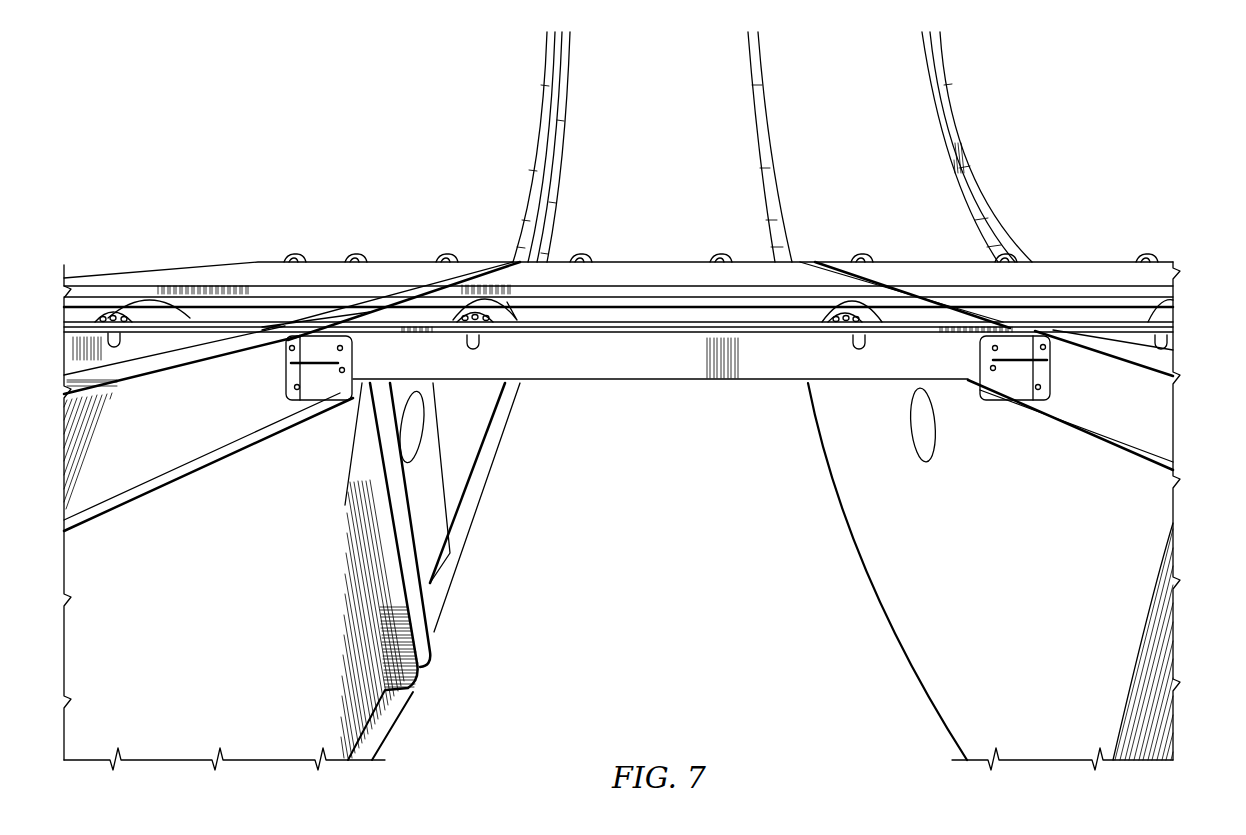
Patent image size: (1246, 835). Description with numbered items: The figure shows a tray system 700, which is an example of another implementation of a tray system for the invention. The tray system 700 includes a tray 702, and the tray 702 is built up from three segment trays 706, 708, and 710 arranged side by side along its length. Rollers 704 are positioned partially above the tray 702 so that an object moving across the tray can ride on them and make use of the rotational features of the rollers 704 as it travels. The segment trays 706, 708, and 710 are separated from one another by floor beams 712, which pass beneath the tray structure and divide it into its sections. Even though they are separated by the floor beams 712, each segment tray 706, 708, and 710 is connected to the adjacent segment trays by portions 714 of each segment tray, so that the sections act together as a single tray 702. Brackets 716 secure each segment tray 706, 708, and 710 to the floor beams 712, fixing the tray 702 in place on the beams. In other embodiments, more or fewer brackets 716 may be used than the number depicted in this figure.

The tray system 700 is at (408, 184).
The tray 702 is at (636, 380).
The rollers 704 is at (148, 316).
The segment tray 706 is at (135, 343).
The segment tray 708 is at (686, 367).
The segment tray 710 is at (1167, 338).
The floor beams 712 is at (468, 468).
The portions 714 is at (313, 298).
The brackets 716 is at (318, 388).